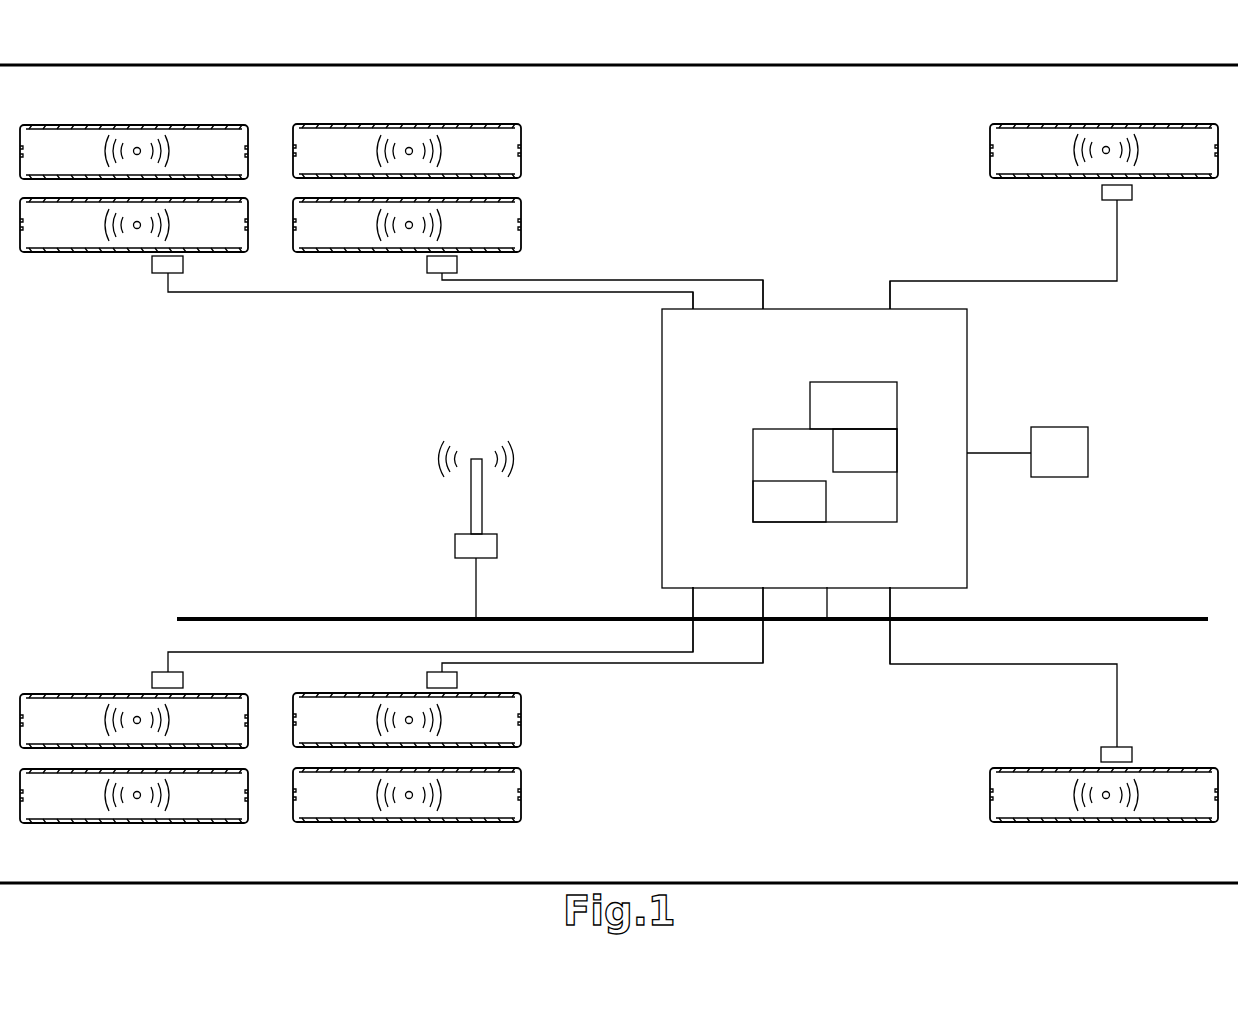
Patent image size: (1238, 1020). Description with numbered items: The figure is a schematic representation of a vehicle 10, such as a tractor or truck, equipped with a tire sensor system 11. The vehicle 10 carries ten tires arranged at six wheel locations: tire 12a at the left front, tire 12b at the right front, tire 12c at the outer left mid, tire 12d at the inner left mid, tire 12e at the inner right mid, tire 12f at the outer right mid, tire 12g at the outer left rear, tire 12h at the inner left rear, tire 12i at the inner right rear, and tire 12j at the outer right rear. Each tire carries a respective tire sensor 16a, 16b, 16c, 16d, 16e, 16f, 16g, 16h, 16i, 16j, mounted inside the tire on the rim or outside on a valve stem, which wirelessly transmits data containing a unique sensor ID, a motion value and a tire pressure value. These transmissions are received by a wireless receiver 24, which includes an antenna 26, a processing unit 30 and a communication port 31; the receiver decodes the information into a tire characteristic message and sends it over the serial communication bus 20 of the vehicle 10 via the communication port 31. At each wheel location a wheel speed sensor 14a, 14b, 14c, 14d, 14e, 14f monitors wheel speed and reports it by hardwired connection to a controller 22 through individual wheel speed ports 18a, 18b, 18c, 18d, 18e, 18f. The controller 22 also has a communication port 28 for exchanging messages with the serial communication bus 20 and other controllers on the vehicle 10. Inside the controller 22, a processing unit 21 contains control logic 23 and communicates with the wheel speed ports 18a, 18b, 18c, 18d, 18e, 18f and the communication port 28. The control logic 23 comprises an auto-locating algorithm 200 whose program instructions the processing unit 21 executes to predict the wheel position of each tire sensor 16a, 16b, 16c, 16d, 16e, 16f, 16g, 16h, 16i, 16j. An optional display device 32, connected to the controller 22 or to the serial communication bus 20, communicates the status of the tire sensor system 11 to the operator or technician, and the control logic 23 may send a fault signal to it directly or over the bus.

The vehicle 10 is at (235, 50).
The tire sensor system 11 is at (802, 235).
The tire 12a is at (1160, 123).
The tire 12b is at (1170, 768).
The tire 12c is at (505, 123).
The tire 12d is at (505, 198).
The tire 12e is at (520, 720).
The tire 12f is at (520, 803).
The tire 12g is at (78, 124).
The tire 12h is at (68, 253).
The tire 12i is at (50, 693).
The tire 12j is at (227, 823).
The wheel speed sensor 14a is at (1132, 192).
The wheel speed sensor 14b is at (1101, 755).
The wheel speed sensor 14c is at (457, 263).
The wheel speed sensor 14d is at (457, 680).
The wheel speed sensor 14e is at (183, 264).
The wheel speed sensor 14f is at (183, 680).
The tire sensor 16a is at (1106, 147).
The tire sensor 16b is at (1106, 798).
The tire sensor 16c is at (409, 147).
The tire sensor 16d is at (409, 228).
The tire sensor 16e is at (409, 717).
The tire sensor 16f is at (409, 798).
The tire sensor 16g is at (136, 147).
The tire sensor 16h is at (137, 229).
The tire sensor 16i is at (137, 717).
The tire sensor 16j is at (137, 798).
The wheel speed port 18a is at (926, 342).
The wheel speed port 18b is at (921, 580).
The wheel speed port 18c is at (794, 342).
The wheel speed port 18d is at (793, 580).
The wheel speed port 18e is at (719, 342).
The wheel speed port 18f is at (717, 580).
The serial communication bus 20 is at (1028, 617).
The processing unit 21 is at (873, 419).
The controller 22 is at (823, 309).
The control logic 23 is at (885, 463).
The wireless receiver 24 is at (481, 530).
The antenna 26 is at (482, 497).
The communication port 28 is at (845, 580).
The processing unit 30 is at (497, 542).
The communication port 31 is at (478, 578).
The display device 32 is at (1078, 468).
The auto-locating algorithm 200 is at (818, 514).